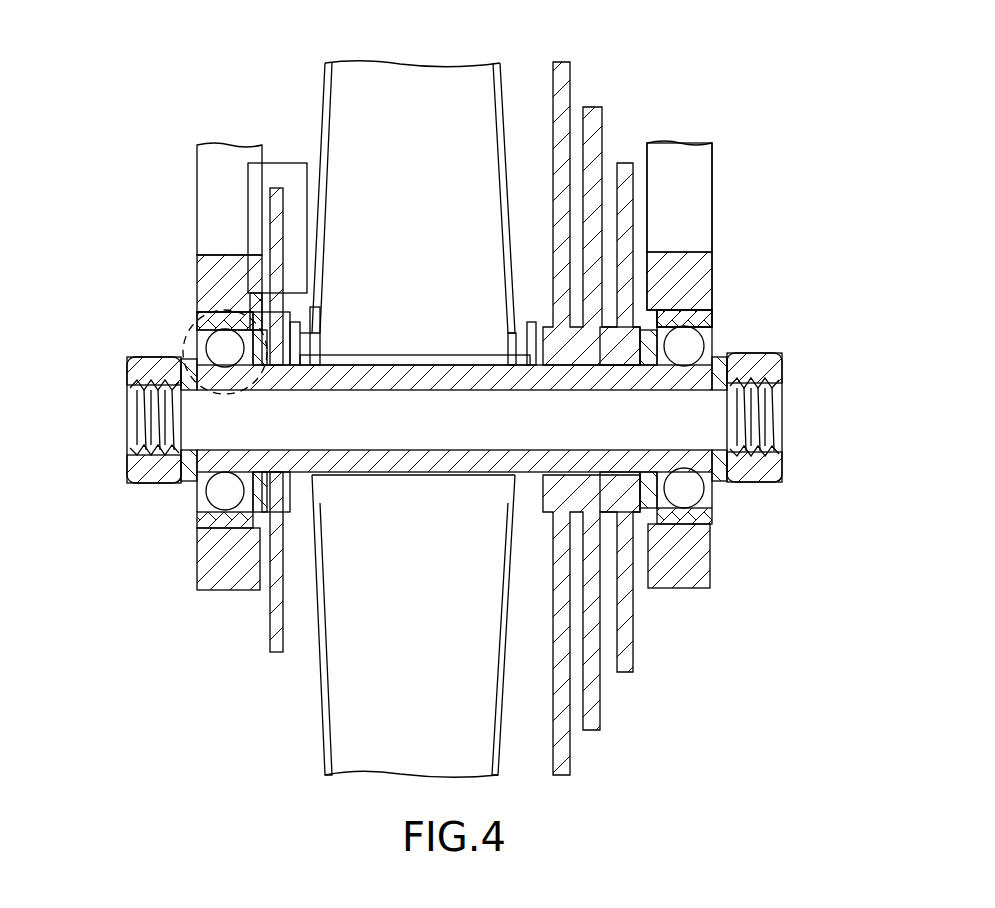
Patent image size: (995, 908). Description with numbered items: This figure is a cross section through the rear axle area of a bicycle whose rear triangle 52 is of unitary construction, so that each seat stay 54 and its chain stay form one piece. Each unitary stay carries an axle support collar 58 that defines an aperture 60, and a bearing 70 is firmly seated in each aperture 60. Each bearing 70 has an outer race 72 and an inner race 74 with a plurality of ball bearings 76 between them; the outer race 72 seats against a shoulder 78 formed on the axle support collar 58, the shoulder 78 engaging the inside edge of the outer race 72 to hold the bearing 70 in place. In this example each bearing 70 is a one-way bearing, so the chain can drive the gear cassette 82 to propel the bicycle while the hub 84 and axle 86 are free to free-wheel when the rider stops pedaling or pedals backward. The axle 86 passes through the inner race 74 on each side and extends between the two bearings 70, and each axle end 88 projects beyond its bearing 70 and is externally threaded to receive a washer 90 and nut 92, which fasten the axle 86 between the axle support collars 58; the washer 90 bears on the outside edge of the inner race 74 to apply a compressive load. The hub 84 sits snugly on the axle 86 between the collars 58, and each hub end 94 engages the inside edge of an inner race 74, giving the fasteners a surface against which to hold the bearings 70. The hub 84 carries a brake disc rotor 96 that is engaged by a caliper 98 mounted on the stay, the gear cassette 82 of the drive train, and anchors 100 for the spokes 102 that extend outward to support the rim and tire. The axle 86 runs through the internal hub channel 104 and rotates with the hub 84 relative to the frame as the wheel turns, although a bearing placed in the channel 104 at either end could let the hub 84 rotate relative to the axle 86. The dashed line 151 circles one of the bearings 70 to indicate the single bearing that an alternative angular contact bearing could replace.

The rear triangle 52 is at (718, 152).
The seat stay 54 is at (714, 212).
The axle support collar 58 is at (200, 280).
The aperture 60 is at (275, 345).
The bearing 70 is at (197, 322).
The outer race 72 is at (713, 332).
The inner race 74 is at (178, 394).
The ball bearings 76 is at (236, 359).
The shoulder 78 is at (262, 320).
The gear cassette 82 is at (600, 128).
The hub 84 is at (352, 362).
The axle 86 is at (360, 395).
The axle end 88 is at (195, 433).
The washer 90 is at (190, 484).
The nut 92 is at (160, 484).
The hub end 94 is at (262, 388).
The brake disc rotor 96 is at (276, 216).
The caliper 98 is at (300, 178).
The anchors 100 is at (512, 352).
The spokes 102 is at (502, 222).
The internal hub channel 104 is at (448, 380).
The dashed line 151 is at (196, 312).